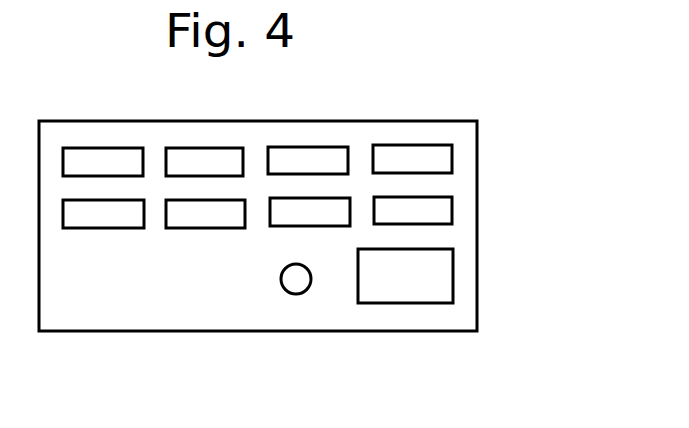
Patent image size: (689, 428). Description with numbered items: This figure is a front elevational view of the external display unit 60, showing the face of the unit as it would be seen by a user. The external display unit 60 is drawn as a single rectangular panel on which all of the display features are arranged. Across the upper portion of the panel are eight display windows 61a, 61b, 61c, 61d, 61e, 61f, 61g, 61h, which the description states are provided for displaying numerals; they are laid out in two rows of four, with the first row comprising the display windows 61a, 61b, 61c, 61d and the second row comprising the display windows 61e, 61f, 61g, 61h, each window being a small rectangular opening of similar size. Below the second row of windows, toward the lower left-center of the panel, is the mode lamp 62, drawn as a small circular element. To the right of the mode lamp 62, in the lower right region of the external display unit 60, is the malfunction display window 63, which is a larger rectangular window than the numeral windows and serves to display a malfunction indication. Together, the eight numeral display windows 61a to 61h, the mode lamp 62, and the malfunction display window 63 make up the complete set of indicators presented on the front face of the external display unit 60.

The external display unit 60 is at (397, 119).
The display window 61a is at (110, 158).
The display window 61b is at (200, 158).
The display window 61c is at (318, 158).
The display window 61d is at (430, 155).
The display window 61e is at (101, 218).
The display window 61f is at (192, 218).
The display window 61g is at (313, 218).
The display window 61h is at (443, 212).
The mode lamp 62 is at (306, 291).
The malfunction display window 63 is at (418, 305).